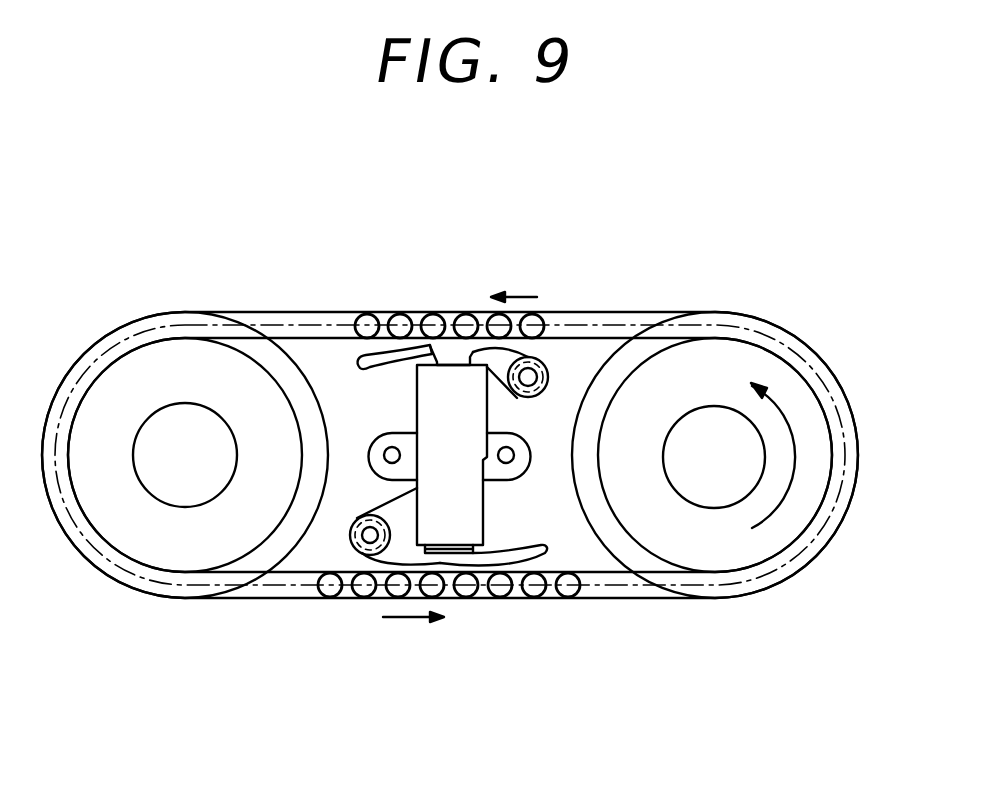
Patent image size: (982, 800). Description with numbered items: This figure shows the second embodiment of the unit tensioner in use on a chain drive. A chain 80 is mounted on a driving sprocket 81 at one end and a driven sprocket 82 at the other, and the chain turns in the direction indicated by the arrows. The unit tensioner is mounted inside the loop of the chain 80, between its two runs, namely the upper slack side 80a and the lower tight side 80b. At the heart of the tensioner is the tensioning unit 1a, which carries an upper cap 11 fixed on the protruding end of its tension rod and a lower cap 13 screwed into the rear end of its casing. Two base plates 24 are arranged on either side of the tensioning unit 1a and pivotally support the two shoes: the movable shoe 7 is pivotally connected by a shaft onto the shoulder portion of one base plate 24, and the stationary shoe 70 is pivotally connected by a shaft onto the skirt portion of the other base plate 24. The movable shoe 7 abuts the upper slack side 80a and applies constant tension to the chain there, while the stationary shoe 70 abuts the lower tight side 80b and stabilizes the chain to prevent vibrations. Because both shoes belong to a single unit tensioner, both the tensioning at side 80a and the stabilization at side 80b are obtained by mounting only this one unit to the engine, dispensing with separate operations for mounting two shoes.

The tensioning unit 1a is at (417, 415).
The movable shoe 7 is at (368, 365).
The upper cap 11 is at (420, 359).
The lower cap 13 is at (455, 540).
The base plate 24 is at (512, 400).
The stationary shoe 70 is at (525, 548).
The chain 80 is at (643, 317).
The upper slack side of chain 80a is at (432, 313).
The lower tight side of chain 80b is at (460, 600).
The driving sprocket 81 is at (745, 365).
The driven sprocket 82 is at (175, 347).